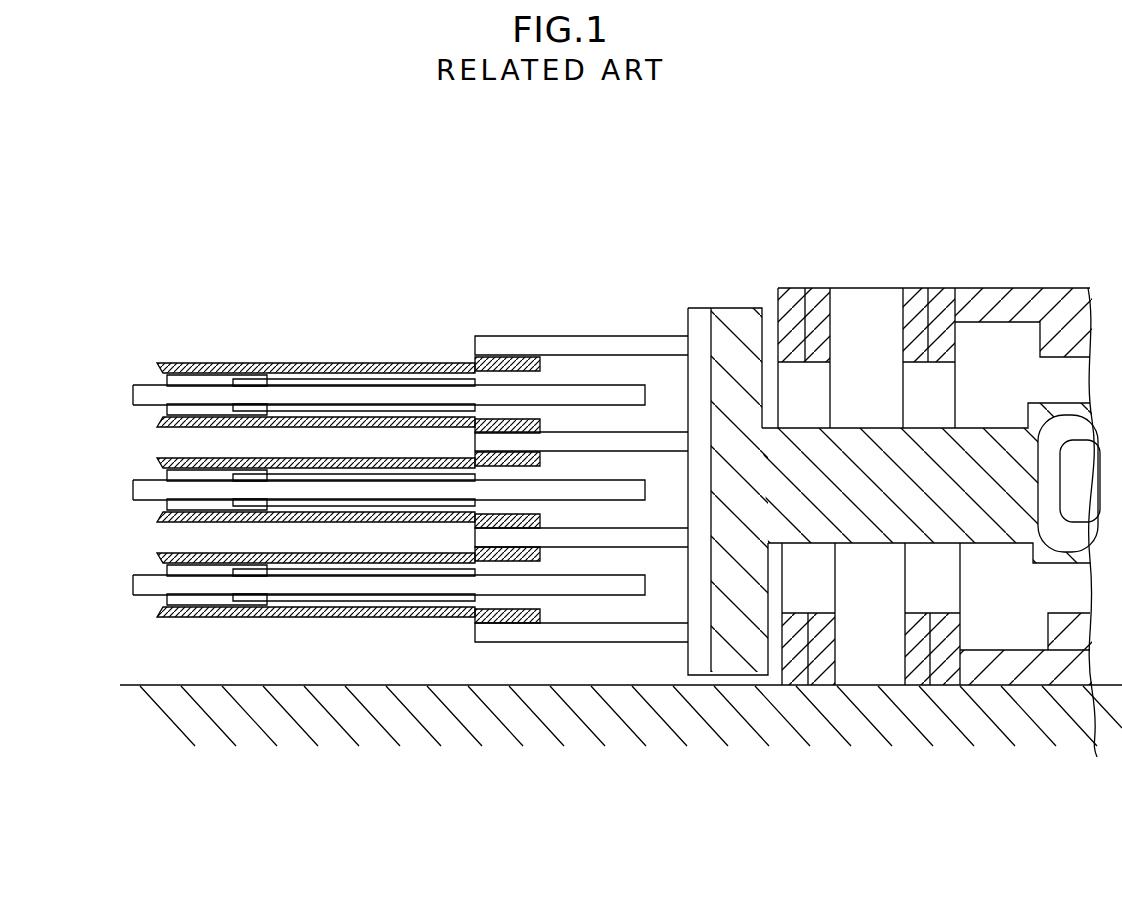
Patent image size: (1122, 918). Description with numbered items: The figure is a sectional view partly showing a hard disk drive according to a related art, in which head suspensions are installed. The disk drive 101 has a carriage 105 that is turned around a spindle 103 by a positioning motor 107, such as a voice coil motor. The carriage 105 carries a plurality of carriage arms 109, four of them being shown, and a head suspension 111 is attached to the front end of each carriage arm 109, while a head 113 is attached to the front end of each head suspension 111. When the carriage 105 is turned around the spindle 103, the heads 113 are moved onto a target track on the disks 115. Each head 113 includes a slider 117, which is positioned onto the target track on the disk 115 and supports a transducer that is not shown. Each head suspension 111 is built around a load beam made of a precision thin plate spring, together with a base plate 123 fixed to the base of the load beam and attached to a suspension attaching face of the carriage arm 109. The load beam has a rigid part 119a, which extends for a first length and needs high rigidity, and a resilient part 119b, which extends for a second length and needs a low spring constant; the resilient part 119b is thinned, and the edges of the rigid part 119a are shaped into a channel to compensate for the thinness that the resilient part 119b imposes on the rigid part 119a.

The disk drive 101 is at (550, 170).
The spindle 103 is at (857, 307).
The carriage 105 is at (700, 300).
The positioning motor 107 is at (1003, 288).
The carriage arm 109 is at (653, 440).
The head suspension 111 is at (312, 350).
The head 113 is at (155, 420).
The disk 115 is at (592, 370).
The slider 117 is at (217, 386).
The rigid part 119a is at (383, 420).
The resilient part 119b is at (460, 364).
The base plate 123 is at (522, 380).